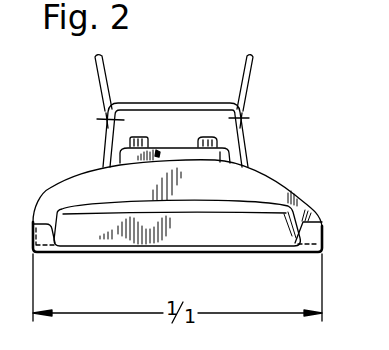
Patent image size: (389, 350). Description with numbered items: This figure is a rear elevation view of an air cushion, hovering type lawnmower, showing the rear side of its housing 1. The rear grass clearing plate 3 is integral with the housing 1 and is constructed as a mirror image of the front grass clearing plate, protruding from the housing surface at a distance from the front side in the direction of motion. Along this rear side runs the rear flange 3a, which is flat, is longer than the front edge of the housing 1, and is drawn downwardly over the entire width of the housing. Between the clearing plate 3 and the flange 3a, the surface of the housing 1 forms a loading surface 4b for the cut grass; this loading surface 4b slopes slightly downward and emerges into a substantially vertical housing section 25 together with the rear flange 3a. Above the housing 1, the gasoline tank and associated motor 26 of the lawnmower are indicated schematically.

The housing 1 is at (266, 199).
The rear grass clearing plate 3 is at (257, 175).
The rear flange 3a is at (323, 247).
The loading surface 4b is at (102, 207).
The vertical housing section 25 is at (232, 221).
The gasoline tank and motor 26 is at (177, 152).